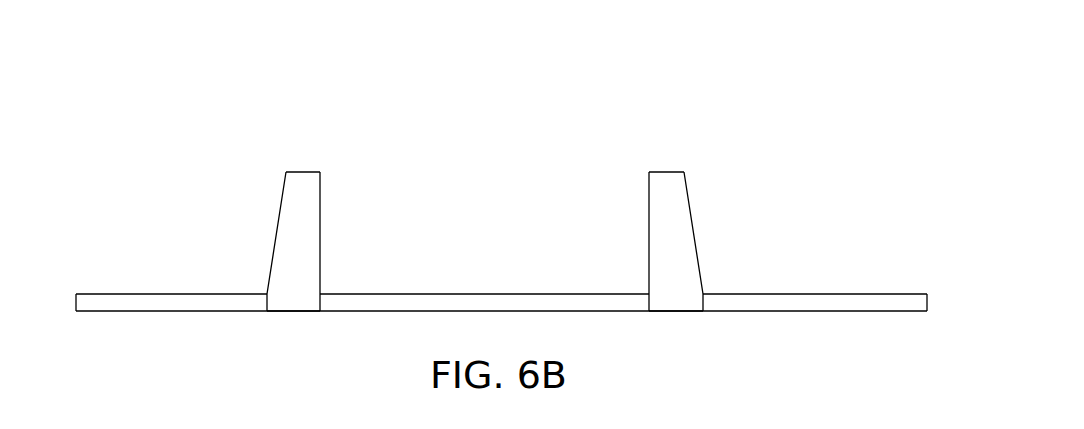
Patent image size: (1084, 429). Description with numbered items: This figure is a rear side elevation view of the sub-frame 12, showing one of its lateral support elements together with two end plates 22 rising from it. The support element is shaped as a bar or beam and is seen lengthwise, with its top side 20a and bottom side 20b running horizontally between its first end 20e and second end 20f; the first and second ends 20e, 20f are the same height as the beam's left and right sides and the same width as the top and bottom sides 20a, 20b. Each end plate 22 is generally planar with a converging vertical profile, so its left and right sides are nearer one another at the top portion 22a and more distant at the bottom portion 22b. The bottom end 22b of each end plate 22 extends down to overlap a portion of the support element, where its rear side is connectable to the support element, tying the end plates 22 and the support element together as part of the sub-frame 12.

The sub-frame 12 is at (404, 100).
The top side of support element 20a is at (484, 293).
The bottom side of support element 20b is at (372, 311).
The first end of support element 20e is at (76, 303).
The second end of support element 20f is at (927, 302).
The end plate 22 is at (313, 210).
The top portion of end plate 22a is at (305, 172).
The bottom portion of end plate 22b is at (291, 311).